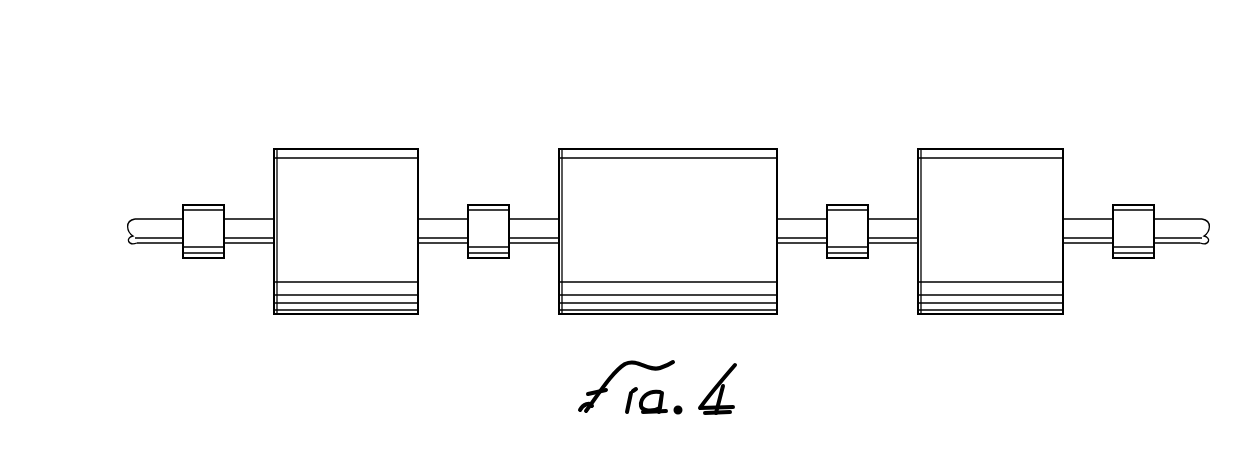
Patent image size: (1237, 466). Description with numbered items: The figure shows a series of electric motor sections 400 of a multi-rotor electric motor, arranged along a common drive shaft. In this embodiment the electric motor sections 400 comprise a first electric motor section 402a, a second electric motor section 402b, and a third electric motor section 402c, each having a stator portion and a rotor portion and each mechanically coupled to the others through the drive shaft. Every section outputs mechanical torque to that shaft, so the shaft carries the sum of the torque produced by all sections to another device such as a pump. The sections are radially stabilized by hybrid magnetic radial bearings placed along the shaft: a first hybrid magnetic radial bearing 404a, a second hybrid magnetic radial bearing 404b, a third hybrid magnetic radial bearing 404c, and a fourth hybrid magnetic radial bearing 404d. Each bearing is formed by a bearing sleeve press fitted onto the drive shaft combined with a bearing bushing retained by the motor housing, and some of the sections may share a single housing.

The electric motor sections 400 is at (1070, 93).
The first electric motor section 402a is at (347, 148).
The second electric motor section 402b is at (670, 148).
The third electric motor section 402c is at (992, 148).
The first hybrid magnetic radial bearing 404a is at (205, 204).
The second hybrid magnetic radial bearing 404b is at (491, 204).
The third hybrid magnetic radial bearing 404c is at (848, 204).
The fourth hybrid magnetic radial bearing 404d is at (1135, 204).